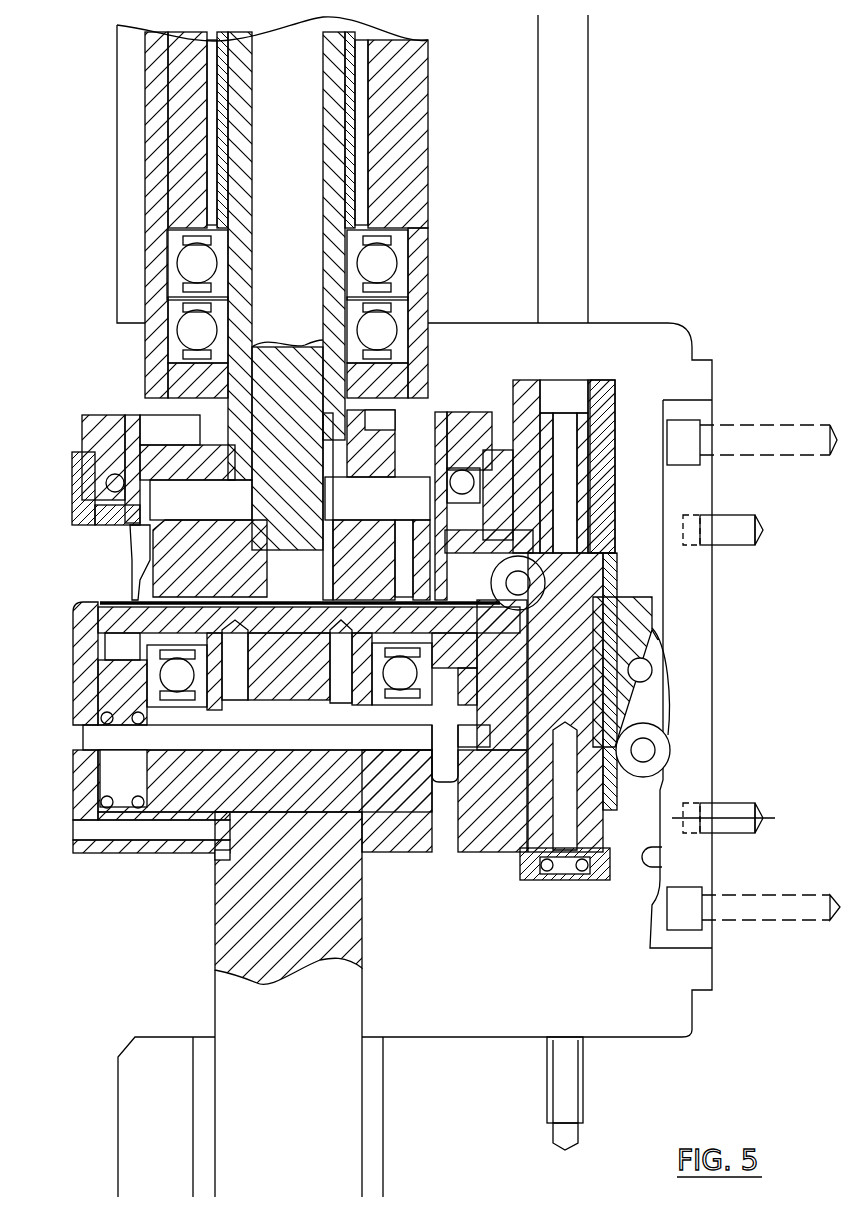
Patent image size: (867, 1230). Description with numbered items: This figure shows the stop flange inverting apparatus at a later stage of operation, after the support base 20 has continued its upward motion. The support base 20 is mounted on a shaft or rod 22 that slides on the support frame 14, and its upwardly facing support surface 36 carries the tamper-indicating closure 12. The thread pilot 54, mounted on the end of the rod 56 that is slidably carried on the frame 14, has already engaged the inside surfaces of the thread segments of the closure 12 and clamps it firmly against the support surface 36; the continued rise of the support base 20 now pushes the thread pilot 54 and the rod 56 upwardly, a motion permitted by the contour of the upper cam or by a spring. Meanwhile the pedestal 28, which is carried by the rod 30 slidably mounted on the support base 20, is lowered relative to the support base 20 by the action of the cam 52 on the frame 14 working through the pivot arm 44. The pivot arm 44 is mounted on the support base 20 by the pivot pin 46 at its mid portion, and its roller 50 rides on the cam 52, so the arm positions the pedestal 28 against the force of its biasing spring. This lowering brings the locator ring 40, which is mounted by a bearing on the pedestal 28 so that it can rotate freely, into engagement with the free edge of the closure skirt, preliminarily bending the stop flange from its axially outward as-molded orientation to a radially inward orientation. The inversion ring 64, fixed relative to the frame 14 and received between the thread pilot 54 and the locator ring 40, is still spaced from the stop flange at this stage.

The tamper-indicating closure 12 is at (126, 580).
The support frame 14 is at (620, 1025).
The support base 20 is at (60, 697).
The shaft or rod 22 is at (238, 907).
The pedestal 28 is at (57, 498).
The rod 30 is at (590, 587).
The support surface 36 is at (100, 605).
The locator ring 40 is at (133, 417).
The pivot arm 44 is at (642, 732).
The pivot pin 46 is at (647, 660).
The roller 50 is at (670, 743).
The cam 52 is at (662, 867).
The thread pilot 54 is at (133, 546).
The rod or shaft 56 is at (292, 91).
The inversion ring 64 is at (147, 418).